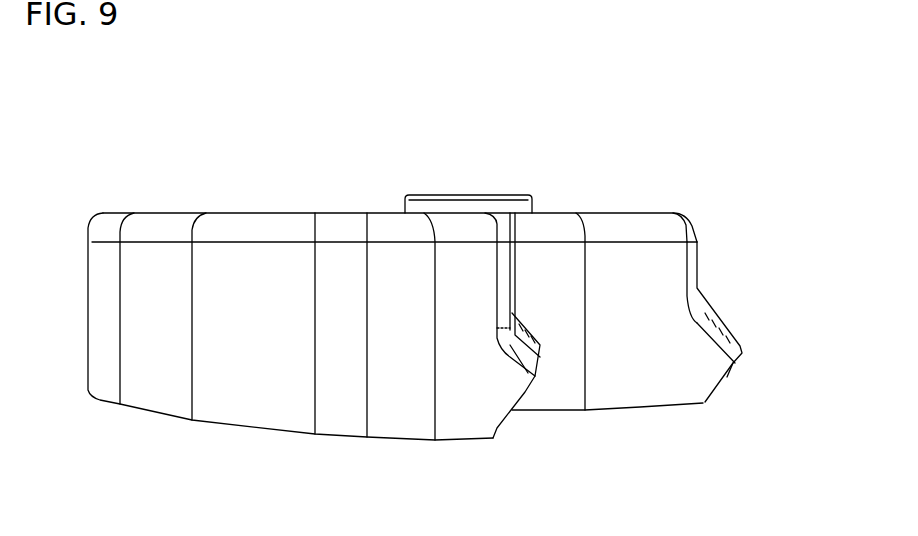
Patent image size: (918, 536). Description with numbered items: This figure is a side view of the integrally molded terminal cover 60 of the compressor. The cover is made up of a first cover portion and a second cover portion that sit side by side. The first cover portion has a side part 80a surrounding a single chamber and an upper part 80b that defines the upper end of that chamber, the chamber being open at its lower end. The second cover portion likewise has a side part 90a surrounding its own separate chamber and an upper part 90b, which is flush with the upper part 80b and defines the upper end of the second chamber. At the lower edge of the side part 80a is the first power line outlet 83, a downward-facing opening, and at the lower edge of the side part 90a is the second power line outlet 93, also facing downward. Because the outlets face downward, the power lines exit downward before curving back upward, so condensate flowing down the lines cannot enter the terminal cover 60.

The terminal cover 60 is at (226, 116).
The side part 90a is at (152, 300).
The upper part 90b is at (228, 213).
The side part 80a is at (643, 312).
The upper part 80b is at (608, 213).
The first power line outlet 83 is at (727, 377).
The second power line outlet 93 is at (507, 425).